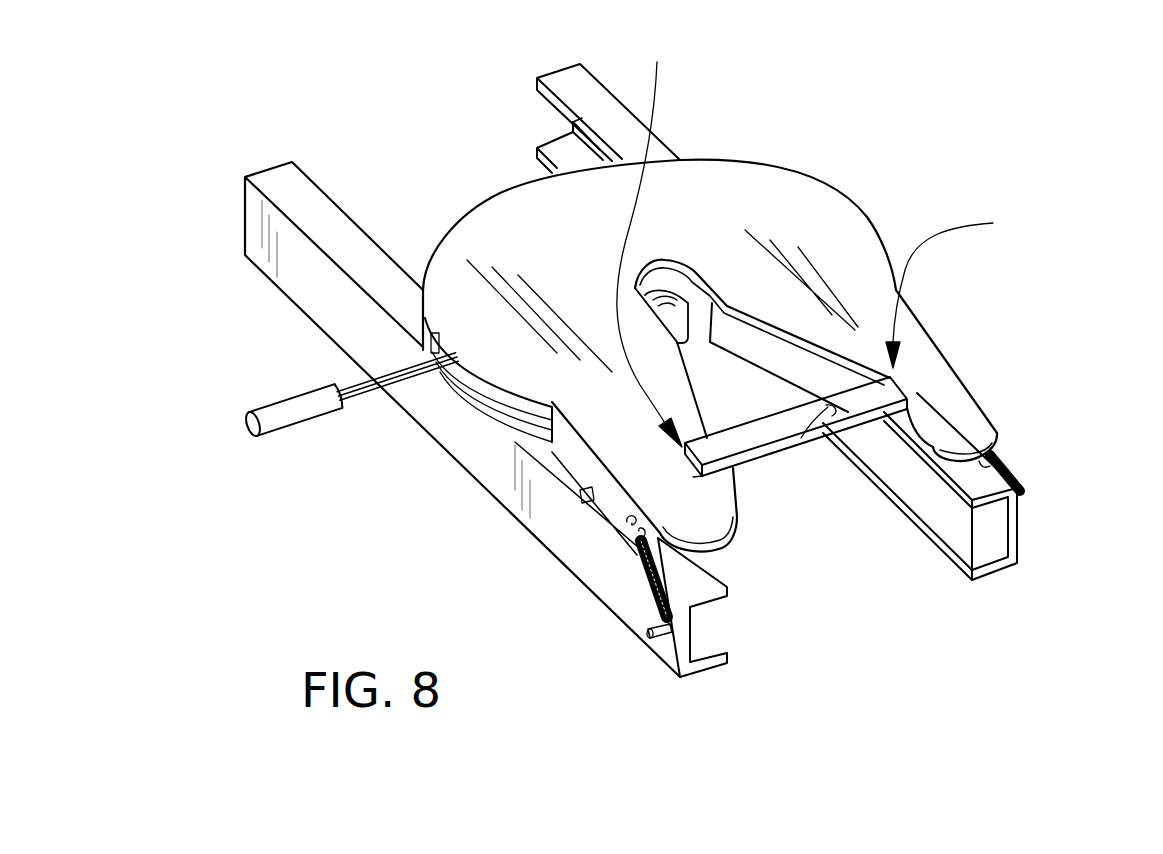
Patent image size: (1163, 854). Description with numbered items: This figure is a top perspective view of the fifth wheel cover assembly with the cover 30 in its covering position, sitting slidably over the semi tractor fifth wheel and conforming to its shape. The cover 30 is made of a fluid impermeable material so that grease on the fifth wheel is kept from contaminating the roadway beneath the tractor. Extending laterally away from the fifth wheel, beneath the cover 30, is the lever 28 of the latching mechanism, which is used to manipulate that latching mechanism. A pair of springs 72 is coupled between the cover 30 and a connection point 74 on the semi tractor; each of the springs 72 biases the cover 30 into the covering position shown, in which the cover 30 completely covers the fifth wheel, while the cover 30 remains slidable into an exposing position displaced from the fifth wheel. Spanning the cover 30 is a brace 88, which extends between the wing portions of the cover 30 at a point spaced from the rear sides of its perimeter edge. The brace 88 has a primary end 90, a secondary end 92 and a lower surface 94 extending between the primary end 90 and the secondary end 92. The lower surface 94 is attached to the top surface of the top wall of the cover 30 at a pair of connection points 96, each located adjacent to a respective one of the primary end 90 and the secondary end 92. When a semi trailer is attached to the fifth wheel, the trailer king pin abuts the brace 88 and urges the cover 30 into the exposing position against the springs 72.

The lever 28 is at (338, 390).
The cover 30 is at (803, 217).
The springs 72 is at (644, 590).
The connection point 74 is at (650, 632).
The brace 88 is at (760, 453).
The primary end 90 is at (693, 477).
The secondary end 92 is at (903, 387).
The lower surface 94 is at (801, 440).
The connection points 96 is at (826, 234).